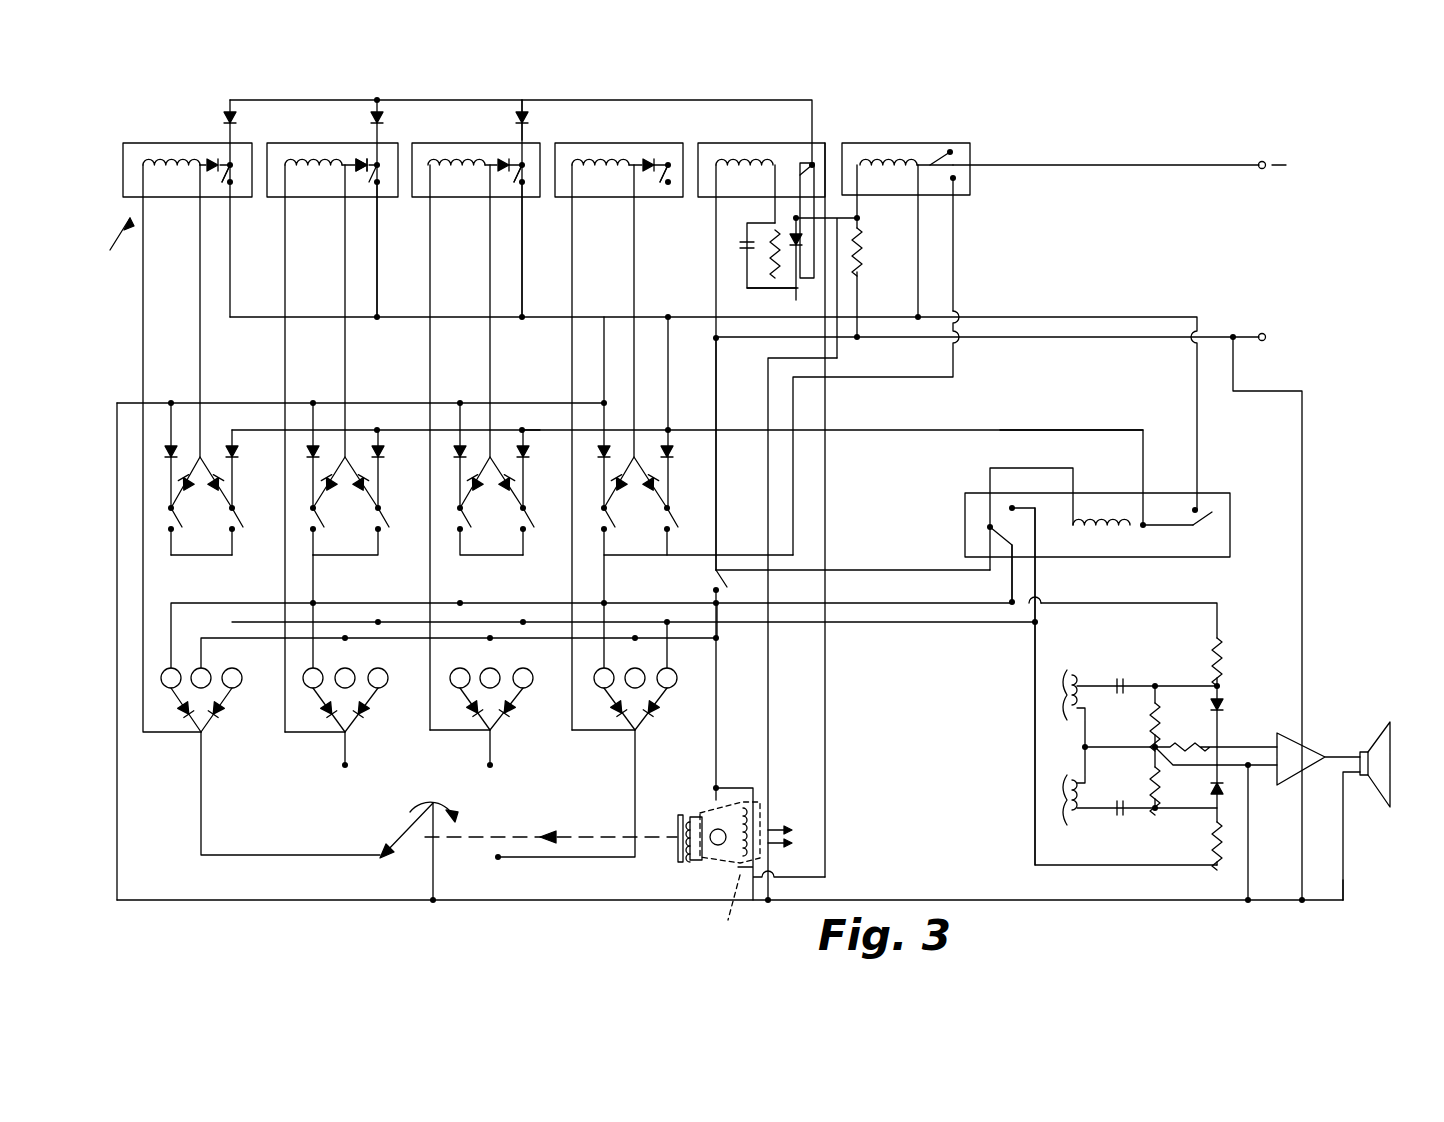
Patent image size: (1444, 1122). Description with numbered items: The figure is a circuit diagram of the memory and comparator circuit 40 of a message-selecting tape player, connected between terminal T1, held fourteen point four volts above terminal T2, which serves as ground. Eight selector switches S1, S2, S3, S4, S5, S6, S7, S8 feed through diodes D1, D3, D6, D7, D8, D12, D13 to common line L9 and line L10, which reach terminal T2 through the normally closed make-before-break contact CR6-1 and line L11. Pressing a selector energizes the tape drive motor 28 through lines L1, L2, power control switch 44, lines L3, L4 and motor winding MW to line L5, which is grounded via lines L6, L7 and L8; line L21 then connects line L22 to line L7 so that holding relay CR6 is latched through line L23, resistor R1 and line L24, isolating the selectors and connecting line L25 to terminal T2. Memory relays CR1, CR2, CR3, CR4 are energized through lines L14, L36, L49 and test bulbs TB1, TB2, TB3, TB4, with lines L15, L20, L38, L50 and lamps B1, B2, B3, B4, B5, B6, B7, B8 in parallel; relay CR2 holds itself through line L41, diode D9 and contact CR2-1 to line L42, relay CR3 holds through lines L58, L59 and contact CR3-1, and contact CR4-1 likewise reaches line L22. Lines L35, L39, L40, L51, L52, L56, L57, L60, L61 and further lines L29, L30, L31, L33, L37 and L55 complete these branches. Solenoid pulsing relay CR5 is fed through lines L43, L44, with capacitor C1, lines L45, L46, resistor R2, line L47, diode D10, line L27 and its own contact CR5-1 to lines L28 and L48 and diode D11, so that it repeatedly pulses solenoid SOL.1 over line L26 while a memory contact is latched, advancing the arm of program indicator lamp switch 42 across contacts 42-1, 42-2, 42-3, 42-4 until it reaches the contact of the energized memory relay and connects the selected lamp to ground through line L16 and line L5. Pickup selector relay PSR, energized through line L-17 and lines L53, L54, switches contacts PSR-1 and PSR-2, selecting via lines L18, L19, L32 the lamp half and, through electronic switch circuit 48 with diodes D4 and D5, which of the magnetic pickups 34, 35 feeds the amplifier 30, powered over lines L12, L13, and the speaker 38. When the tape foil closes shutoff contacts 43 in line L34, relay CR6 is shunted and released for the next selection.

The memory and comparator electrical circuit 40 is at (110, 242).
The memory relay CR1 is at (170, 148).
The memory relay CR2 is at (318, 148).
The memory relay CR3 is at (472, 146).
The memory relay CR4 is at (602, 150).
The solenoid pulsing relay CR5 is at (740, 148).
The holding circuit relay CR6 is at (896, 150).
The relay switch CR2-1 is at (230, 187).
The relay contact CR3-1 is at (518, 182).
The relay switch CR4-1 is at (623, 196).
The relay switch CR5-1 is at (808, 158).
The normally closed switch CR6-1 is at (960, 176).
The diode D1 is at (167, 458).
The diode D3 is at (192, 482).
The diode D4 is at (1226, 704).
The diode D5 is at (1212, 808).
The diode D6 is at (307, 462).
The diode D7 is at (325, 718).
The diode D8 is at (328, 487).
The diode D9 is at (363, 177).
The diode D10 is at (800, 234).
The diode D11 is at (385, 118).
The diode D12 is at (515, 486).
The diode D13 is at (513, 466).
The selector switch S1 is at (176, 531).
The selector switch S2 is at (320, 531).
The selector switch S3 is at (466, 531).
The selector switch S4 is at (608, 531).
The selector switch S5 is at (239, 524).
The selector switch S6 is at (384, 524).
The selector switch S7 is at (529, 524).
The selector switch S8 is at (674, 524).
The lamp B1 is at (172, 688).
The lamp B2 is at (300, 687).
The lamp B3 is at (462, 688).
The lamp B4 is at (606, 688).
The lamp B5 is at (233, 690).
The lamp B6 is at (378, 688).
The lamp B7 is at (521, 690).
The lamp B8 is at (666, 690).
The test bulb TB1 is at (211, 667).
The test bulb TB2 is at (356, 667).
The test bulb TB3 is at (501, 667).
The lamp TB4 is at (646, 667).
The resistor R1 is at (862, 246).
The resistor R2 is at (766, 259).
The capacitor C1 is at (744, 250).
The pickup selector relay PSR is at (1116, 548).
The relay contacts PSR-1 is at (988, 530).
The relay switch PSR-2 is at (1208, 524).
The terminal T1 is at (1263, 334).
The terminal T2 is at (1276, 152).
The program indicator lamp switch 42 is at (456, 834).
The contact 42-1 is at (381, 848).
The contact 42-2 is at (348, 770).
The contact 42-3 is at (504, 766).
The contact 42-4 is at (494, 858).
The shutoff contacts 43 is at (772, 828).
The power control switch 44 is at (710, 580).
The electronic switch circuit 48 is at (1226, 650).
The tape drive motor 28 is at (715, 902).
The amplifier 30 is at (1303, 750).
The magnetic pickup 34 is at (1065, 700).
The magnetic pickup 35 is at (1065, 806).
The audio speaker 38 is at (1366, 796).
The solenoid actuator SOL.1 is at (679, 870).
The motor coil MW is at (739, 788).
The line L1 is at (1058, 338).
The line L2 is at (716, 378).
The line L3 is at (717, 638).
The line L4 is at (718, 786).
The line L5 is at (338, 912).
The line L6 is at (117, 900).
The line L7 is at (126, 400).
The line L8 is at (162, 404).
The common line L9 is at (216, 560).
The line L10 is at (956, 290).
The line L11 is at (1130, 163).
The line L12 is at (1302, 498).
The line L13 is at (1296, 838).
The line L14 is at (680, 640).
The line L15 is at (201, 646).
The line L16 is at (201, 816).
The line L-17 is at (908, 572).
The line L18 is at (1010, 580).
The line L19 is at (584, 608).
The line L20 is at (173, 608).
The line L21 is at (606, 360).
The line L22 is at (600, 302).
The line L23 is at (857, 305).
The line L24 is at (921, 252).
The line L25 is at (943, 150).
The line L26 is at (825, 471).
The line L27 is at (828, 148).
The line L28 is at (822, 123).
The lead L29 is at (186, 734).
The lead L30 is at (200, 339).
The lead L31 is at (183, 452).
The line L32 is at (209, 138).
The lead L33 is at (233, 263).
The line L34 is at (768, 706).
The line L35 is at (300, 410).
The line L36 is at (297, 640).
The lead L37 is at (310, 604).
The line L38 is at (330, 732).
The line L39 is at (345, 352).
The line L40 is at (346, 430).
The line L41 is at (362, 145).
The line L42 is at (381, 263).
The line L43 is at (710, 284).
The line L44 is at (748, 194).
The line L45 is at (760, 243).
The line L46 is at (768, 290).
The line L47 is at (791, 286).
The line L48 is at (377, 100).
The line L49 is at (459, 635).
The line L50 is at (472, 730).
The line L51 is at (488, 348).
The line L52 is at (509, 410).
The line L53 is at (1102, 427).
The line L54 is at (522, 426).
The lead L55 is at (528, 130).
The line L56 is at (1198, 454).
The line L57 is at (544, 630).
The line L58 is at (518, 153).
The line L59 is at (520, 258).
The line L60 is at (1038, 586).
The line L61 is at (889, 622).